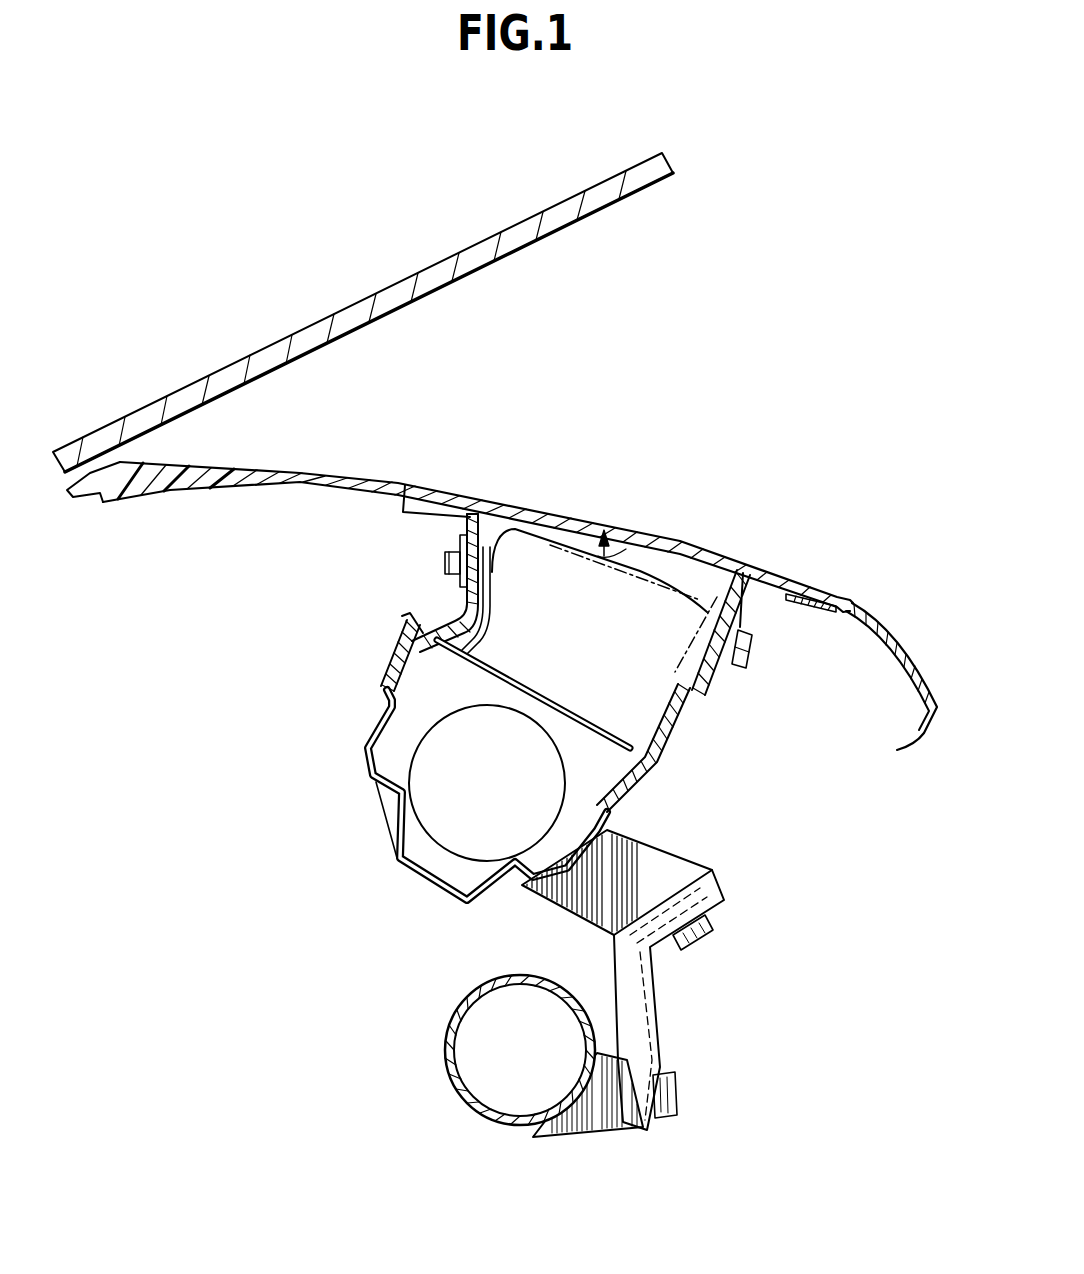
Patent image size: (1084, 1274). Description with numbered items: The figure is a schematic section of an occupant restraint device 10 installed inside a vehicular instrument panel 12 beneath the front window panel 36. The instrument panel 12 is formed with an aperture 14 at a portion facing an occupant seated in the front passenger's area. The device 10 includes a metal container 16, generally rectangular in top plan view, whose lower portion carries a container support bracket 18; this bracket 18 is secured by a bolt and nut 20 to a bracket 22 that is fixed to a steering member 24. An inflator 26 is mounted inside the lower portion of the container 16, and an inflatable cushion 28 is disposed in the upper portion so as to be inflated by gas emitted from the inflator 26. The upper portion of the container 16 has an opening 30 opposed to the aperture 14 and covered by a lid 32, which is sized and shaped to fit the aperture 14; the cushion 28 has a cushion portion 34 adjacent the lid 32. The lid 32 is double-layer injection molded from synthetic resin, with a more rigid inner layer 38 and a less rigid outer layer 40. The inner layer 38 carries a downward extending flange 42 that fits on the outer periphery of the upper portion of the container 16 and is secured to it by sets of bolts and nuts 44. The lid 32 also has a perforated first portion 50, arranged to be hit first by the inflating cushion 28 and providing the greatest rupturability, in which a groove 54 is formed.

The occupant restraint device 10 is at (360, 723).
The instrument panel 12 is at (320, 480).
The aperture 14 is at (787, 597).
The container 16 is at (393, 670).
The container support bracket 18 is at (650, 865).
The bolt and nut 20 is at (712, 935).
The bracket 22 is at (660, 1003).
The steering member 24 is at (458, 1090).
The inflator 26 is at (463, 797).
The inflatable cushion 28 is at (655, 690).
The opening 30 is at (740, 562).
The lid 32 is at (715, 530).
The cushion portion 34 is at (688, 522).
The front window panel 36 is at (384, 290).
The inner layer 38 is at (530, 533).
The outer layer 40 is at (478, 490).
The flange 42 is at (465, 602).
The bolts and nuts 44 is at (445, 573).
The first portion 50 is at (648, 550).
The groove 54 is at (611, 528).